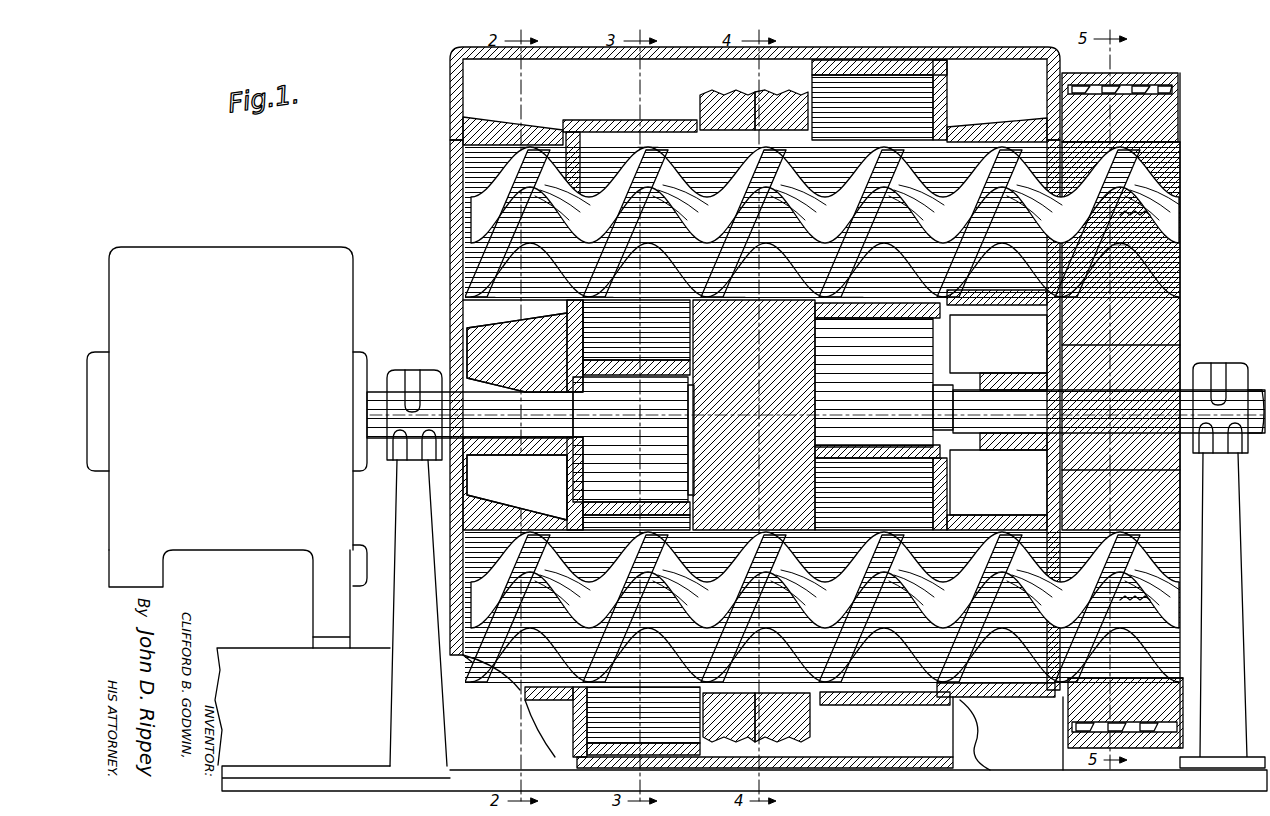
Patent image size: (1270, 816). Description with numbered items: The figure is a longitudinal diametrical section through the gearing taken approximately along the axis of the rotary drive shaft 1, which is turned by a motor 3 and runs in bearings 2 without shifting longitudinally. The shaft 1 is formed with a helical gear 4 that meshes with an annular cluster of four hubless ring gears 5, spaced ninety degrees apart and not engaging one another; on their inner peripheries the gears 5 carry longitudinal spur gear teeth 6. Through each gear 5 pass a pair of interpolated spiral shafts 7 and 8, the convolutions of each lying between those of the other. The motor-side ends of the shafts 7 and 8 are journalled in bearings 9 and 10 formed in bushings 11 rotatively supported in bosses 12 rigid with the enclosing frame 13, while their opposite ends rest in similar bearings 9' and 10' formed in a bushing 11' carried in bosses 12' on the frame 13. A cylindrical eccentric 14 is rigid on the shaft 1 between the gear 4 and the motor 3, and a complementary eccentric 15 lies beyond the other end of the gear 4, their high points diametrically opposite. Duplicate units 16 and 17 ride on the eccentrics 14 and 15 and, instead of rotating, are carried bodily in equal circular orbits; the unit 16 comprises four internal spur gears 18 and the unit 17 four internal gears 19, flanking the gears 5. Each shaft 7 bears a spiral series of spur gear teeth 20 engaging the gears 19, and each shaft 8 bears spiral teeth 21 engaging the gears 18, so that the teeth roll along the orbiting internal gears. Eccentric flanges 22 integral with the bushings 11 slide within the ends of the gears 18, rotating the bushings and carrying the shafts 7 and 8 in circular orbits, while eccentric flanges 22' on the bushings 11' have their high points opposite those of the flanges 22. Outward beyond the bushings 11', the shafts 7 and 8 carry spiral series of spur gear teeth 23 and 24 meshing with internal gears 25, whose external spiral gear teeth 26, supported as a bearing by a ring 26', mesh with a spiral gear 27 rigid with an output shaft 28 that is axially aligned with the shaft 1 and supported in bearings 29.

The rotary drive shaft 1 is at (388, 395).
The bearings 2 is at (400, 370).
The motor 3 is at (227, 447).
The helical gear 4 is at (818, 376).
The gears 5 is at (762, 125).
The spur gear teeth 6 is at (722, 130).
The spiral shafts 7 is at (470, 278).
The spiral shafts 8 is at (470, 210).
The bearings 9 is at (589, 409).
The bearings 9' is at (1065, 452).
The bearings 10 is at (496, 346).
The bearings 10' is at (998, 304).
The bushings 11 is at (517, 308).
The bushing 11' is at (996, 416).
The bosses 12 is at (518, 421).
The bosses 12' is at (1013, 305).
The enclosing frame 13 is at (1005, 52).
The cylindrical eccentric 14 is at (598, 437).
The cylindrical eccentric 15 is at (940, 380).
The unit 16 is at (656, 492).
The unit 17 is at (874, 440).
The internal spur gears 18 is at (613, 120).
The internal gears 19 is at (878, 62).
The spiral series of spur gear teeth 20 is at (760, 208).
The spiral series of teeth 21 is at (630, 155).
The eccentric flanges 22 is at (611, 423).
The eccentric flanges 22' is at (997, 304).
The spiral series of spur gear teeth 23 is at (1135, 222).
The spiral series of spur gear teeth 24 is at (1080, 140).
The internal gears 25 is at (1160, 142).
The external spiral gear teeth 26 is at (1150, 384).
The ring 26' is at (1155, 405).
The spiral gear 27 is at (1140, 330).
The shaft 28 is at (1257, 388).
The bearings 29 is at (1222, 363).